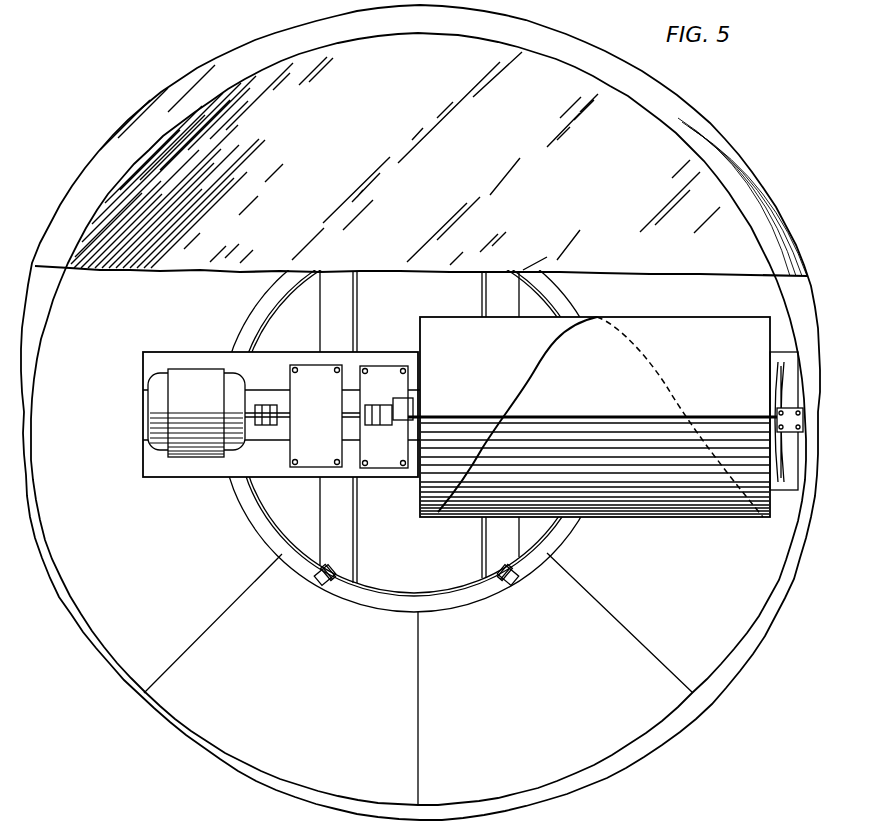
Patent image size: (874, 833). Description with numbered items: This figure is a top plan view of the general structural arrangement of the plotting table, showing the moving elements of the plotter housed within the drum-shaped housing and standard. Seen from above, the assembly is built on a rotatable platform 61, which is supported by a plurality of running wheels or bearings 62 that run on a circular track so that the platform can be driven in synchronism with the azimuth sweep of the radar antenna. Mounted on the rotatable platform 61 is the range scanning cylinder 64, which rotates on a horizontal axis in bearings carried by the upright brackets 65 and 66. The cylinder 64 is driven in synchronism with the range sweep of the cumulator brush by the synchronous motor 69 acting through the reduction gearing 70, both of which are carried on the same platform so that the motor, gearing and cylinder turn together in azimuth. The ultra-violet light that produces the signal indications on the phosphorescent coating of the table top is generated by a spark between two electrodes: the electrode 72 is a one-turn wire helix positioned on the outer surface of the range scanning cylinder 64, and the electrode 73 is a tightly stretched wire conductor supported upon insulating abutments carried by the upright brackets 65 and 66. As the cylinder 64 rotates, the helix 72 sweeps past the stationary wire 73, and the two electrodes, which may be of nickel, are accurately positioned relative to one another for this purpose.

The rotatable platform 61 is at (156, 478).
The running wheels or bearings 62 is at (325, 585).
The range scanning cylinder 64 is at (705, 323).
The upright bracket 65 is at (413, 406).
The upright bracket 66 is at (787, 372).
The synchronous motor 69 is at (193, 454).
The reduction gearing 70 is at (303, 460).
The electrode 72 is at (537, 371).
The electrode 73 is at (584, 416).